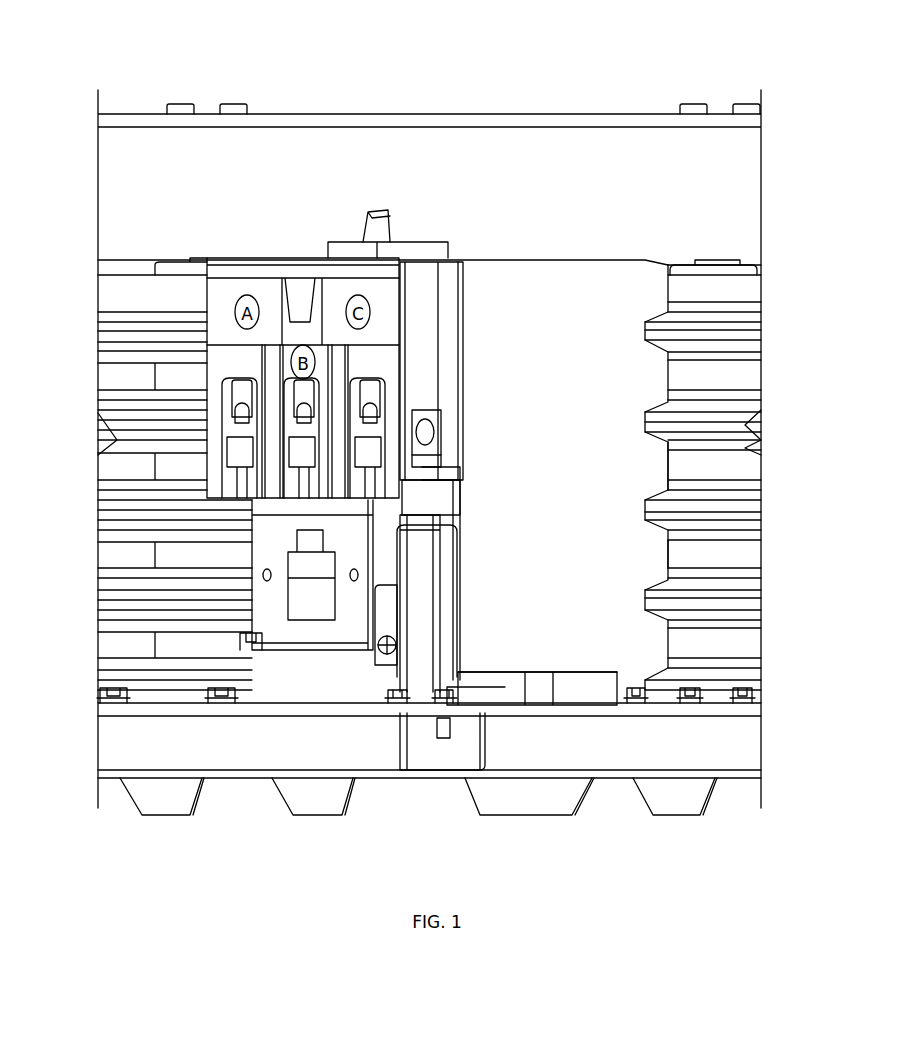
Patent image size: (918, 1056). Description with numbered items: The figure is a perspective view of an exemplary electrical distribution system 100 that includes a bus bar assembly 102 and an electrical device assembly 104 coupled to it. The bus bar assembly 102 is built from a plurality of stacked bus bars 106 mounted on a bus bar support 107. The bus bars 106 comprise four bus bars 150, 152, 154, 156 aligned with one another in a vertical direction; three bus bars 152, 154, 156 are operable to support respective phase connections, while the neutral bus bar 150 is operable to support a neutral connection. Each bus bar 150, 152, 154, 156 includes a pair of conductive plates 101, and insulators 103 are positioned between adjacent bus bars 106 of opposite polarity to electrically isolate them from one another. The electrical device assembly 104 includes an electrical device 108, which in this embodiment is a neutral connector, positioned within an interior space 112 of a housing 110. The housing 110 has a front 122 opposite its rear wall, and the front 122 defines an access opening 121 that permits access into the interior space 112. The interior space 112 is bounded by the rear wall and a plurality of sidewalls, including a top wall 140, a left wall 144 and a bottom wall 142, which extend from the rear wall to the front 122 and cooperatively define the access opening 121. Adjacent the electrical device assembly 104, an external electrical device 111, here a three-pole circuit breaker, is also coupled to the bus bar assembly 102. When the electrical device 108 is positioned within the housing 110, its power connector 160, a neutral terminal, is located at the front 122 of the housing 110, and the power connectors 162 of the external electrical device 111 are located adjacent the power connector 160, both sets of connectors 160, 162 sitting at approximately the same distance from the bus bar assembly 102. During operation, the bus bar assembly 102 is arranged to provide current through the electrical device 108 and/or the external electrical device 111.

The electrical distribution system 100 is at (112, 48).
The conductive plates 101 is at (753, 397).
The bus bar assembly 102 is at (766, 285).
The insulators 103 is at (118, 513).
The electrical device assembly 104 is at (645, 465).
The bus bars 106 is at (762, 447).
The bus bar support 107 is at (120, 745).
The electrical device 108 is at (165, 378).
The housing 110 is at (620, 558).
The external electrical device 111 is at (340, 242).
The interior space 112 is at (427, 323).
The access opening 121 is at (455, 385).
The front 122 is at (432, 490).
The top wall 140 is at (548, 258).
The bottom wall 142 is at (526, 673).
The left wall 144 is at (538, 615).
The neutral bus bar 150 is at (165, 647).
The bus bar 152 is at (165, 557).
The bus bar 154 is at (165, 467).
The bus bar 156 is at (417, 448).
The power connector 160 is at (433, 458).
The power connectors 162 is at (363, 455).